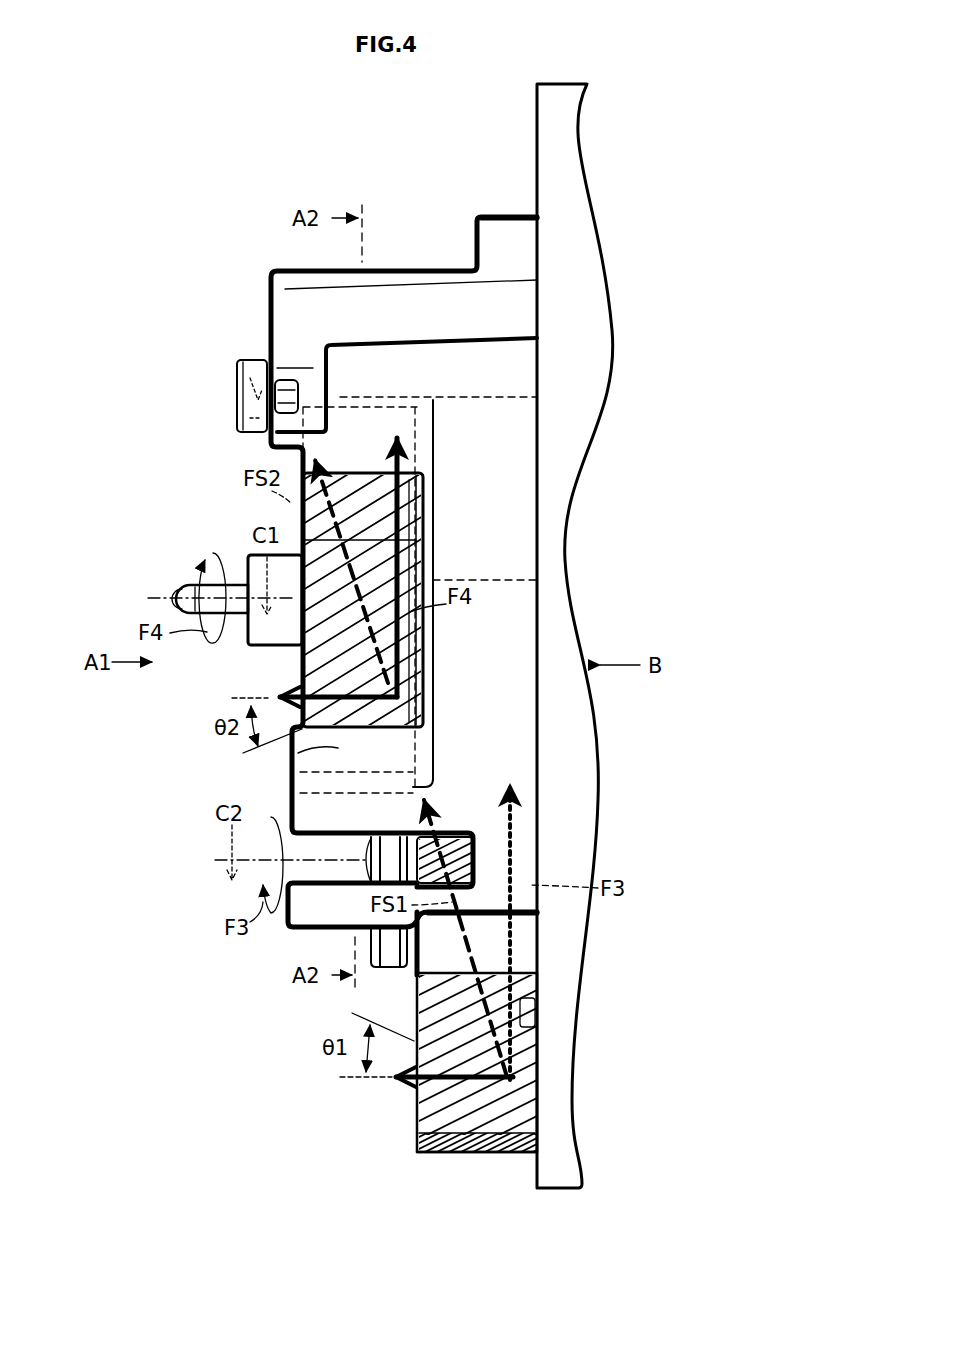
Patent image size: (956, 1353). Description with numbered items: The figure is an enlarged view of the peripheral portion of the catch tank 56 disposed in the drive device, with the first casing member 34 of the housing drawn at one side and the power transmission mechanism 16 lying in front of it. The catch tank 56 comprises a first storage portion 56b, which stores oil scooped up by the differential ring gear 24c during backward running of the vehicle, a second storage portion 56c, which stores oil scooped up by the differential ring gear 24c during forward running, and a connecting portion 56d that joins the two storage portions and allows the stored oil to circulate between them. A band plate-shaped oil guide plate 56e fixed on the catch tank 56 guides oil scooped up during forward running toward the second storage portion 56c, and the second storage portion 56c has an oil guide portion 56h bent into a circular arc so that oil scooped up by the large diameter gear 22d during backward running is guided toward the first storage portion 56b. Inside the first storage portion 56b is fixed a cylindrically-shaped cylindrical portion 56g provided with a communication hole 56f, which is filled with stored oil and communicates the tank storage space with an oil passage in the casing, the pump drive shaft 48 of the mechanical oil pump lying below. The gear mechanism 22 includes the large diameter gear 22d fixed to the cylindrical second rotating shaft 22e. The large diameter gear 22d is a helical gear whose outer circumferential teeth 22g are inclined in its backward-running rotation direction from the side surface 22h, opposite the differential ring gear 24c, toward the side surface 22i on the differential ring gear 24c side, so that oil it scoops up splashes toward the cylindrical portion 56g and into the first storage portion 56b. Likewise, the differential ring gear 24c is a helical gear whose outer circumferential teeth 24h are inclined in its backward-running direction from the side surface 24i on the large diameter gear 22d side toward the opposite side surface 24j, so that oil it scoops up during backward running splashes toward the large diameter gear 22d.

The power transmission mechanism 16 is at (360, 1172).
The gear mechanism 22 is at (276, 511).
The large diameter gear 22d is at (366, 432).
The second rotating shaft 22e is at (248, 568).
The outer circumferential teeth 22g is at (428, 507).
The side surface 22h is at (410, 541).
The side surface 22i is at (300, 776).
The differential ring gear 24c is at (508, 606).
The outer circumferential teeth 24h is at (475, 856).
The side surface 24i is at (512, 1128).
The side surface 24j is at (420, 1094).
The first casing member 34 is at (553, 110).
The pump drive shaft 48 is at (176, 592).
The catch tank 56 is at (262, 245).
The first storage portion 56b is at (576, 300).
The second storage portion 56c is at (587, 758).
The connecting portion 56d is at (553, 480).
The oil guide plate 56e is at (527, 940).
The communication hole 56f is at (252, 362).
The cylindrical portion 56g is at (256, 422).
The oil guide portion 56h is at (338, 745).